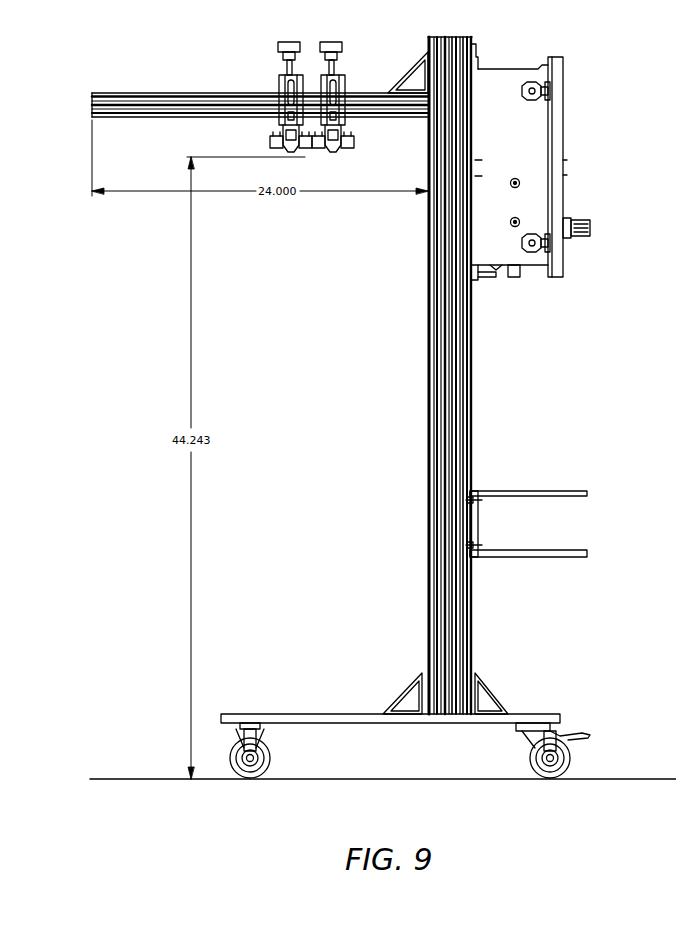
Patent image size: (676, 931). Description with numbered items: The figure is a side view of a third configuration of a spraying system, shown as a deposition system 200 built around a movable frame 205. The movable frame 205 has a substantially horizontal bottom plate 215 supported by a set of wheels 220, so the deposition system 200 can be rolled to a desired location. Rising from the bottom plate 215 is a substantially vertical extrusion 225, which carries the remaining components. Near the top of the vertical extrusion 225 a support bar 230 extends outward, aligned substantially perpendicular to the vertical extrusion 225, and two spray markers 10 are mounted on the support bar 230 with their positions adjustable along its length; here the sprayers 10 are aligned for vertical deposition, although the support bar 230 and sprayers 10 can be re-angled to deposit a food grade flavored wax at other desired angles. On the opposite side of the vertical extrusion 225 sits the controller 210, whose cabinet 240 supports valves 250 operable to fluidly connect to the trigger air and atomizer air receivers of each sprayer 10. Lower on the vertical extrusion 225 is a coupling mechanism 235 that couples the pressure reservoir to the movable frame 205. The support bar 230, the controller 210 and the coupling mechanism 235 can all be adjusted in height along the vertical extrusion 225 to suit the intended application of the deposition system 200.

The spray marker 10 is at (283, 128).
The deposition system 200 is at (530, 30).
The movable frame 205 is at (517, 355).
The controller 210 is at (564, 125).
The bottom plate 215 is at (538, 712).
The wheels 220 is at (270, 760).
The vertical extrusion 225 is at (470, 445).
The support bar 230 is at (133, 92).
The coupling mechanism 235 is at (590, 493).
The cabinet 240 is at (563, 66).
The valves 250 is at (592, 232).